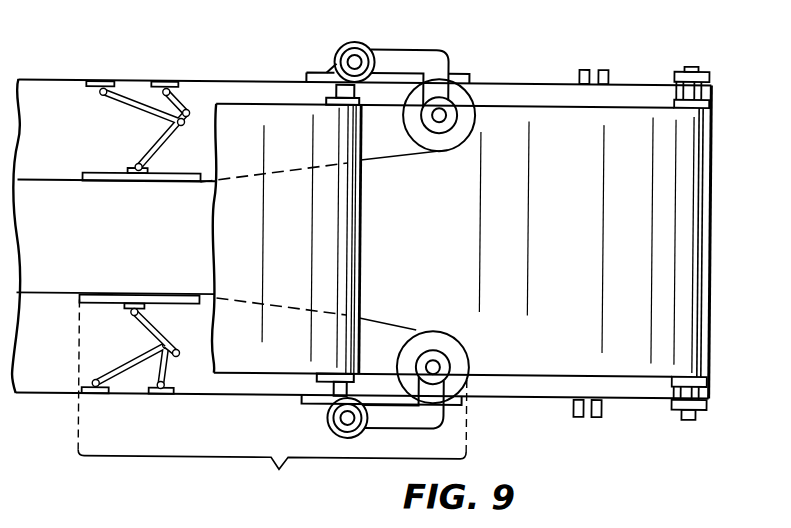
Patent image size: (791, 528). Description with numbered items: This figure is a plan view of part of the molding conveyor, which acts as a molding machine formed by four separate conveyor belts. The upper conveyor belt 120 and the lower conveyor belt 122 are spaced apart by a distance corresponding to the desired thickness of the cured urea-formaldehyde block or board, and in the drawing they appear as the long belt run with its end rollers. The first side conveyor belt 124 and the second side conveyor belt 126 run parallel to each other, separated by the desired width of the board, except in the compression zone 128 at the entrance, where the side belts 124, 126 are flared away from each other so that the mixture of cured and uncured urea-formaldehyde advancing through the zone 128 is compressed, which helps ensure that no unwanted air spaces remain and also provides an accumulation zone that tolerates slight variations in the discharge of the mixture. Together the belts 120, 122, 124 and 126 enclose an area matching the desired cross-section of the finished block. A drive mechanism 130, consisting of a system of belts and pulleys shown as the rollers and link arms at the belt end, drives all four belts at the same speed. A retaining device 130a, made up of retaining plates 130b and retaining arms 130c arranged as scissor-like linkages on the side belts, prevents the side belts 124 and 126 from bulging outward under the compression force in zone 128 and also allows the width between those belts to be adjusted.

The upper conveyor belt 120 is at (358, 261).
The lower conveyor belt 122 is at (710, 267).
The first side conveyor belt 124 is at (55, 183).
The second side conveyor belt 126 is at (57, 297).
The compression zone 128 is at (273, 398).
The drive mechanism 130 is at (413, 50).
The retaining device 130a is at (185, 374).
The retaining plates 130b is at (163, 297).
The retaining arms 130c is at (182, 362).